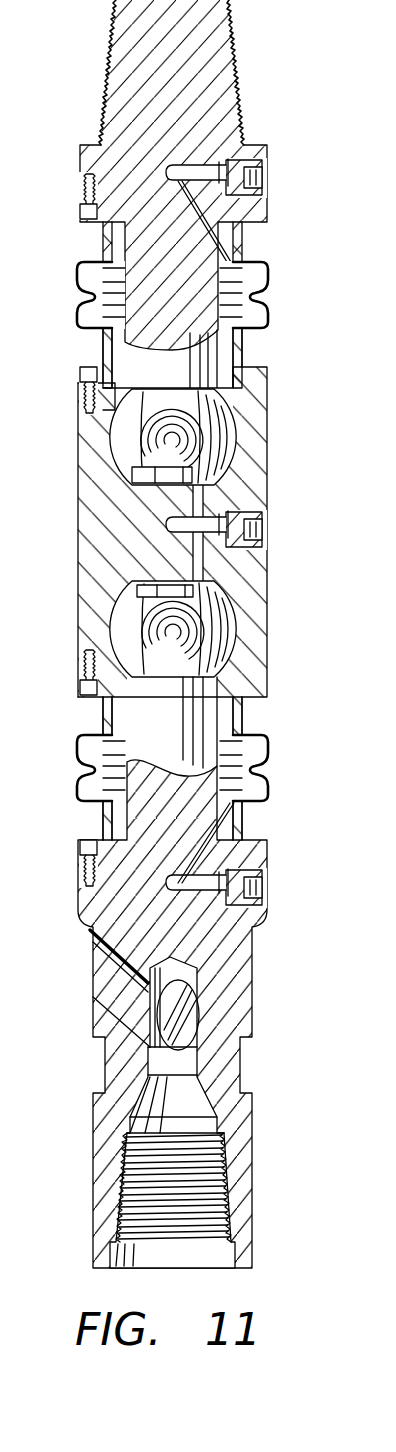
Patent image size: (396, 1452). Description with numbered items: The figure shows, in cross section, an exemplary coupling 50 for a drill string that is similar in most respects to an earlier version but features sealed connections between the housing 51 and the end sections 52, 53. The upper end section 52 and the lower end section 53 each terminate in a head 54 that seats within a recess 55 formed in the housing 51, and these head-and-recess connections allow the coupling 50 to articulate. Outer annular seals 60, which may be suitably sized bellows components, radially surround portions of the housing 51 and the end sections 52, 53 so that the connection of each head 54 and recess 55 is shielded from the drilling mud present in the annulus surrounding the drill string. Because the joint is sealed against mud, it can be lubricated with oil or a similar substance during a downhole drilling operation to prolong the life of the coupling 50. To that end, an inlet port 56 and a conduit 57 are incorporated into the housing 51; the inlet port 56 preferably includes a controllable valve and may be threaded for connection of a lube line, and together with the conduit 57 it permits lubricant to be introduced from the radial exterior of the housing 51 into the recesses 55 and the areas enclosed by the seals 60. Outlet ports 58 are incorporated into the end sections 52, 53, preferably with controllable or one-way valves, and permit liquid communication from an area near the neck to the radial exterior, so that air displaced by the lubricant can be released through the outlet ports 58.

The coupling 50 is at (267, 478).
The housing 51 is at (97, 533).
The end section 52 is at (112, 130).
The end section 53 is at (107, 1025).
The head 54 is at (219, 434).
The recess 55 is at (148, 472).
The inlet port 56 is at (258, 518).
The conduit 57 is at (200, 558).
The outlet port 58 is at (262, 166).
The outer annular seal 60 is at (80, 292).